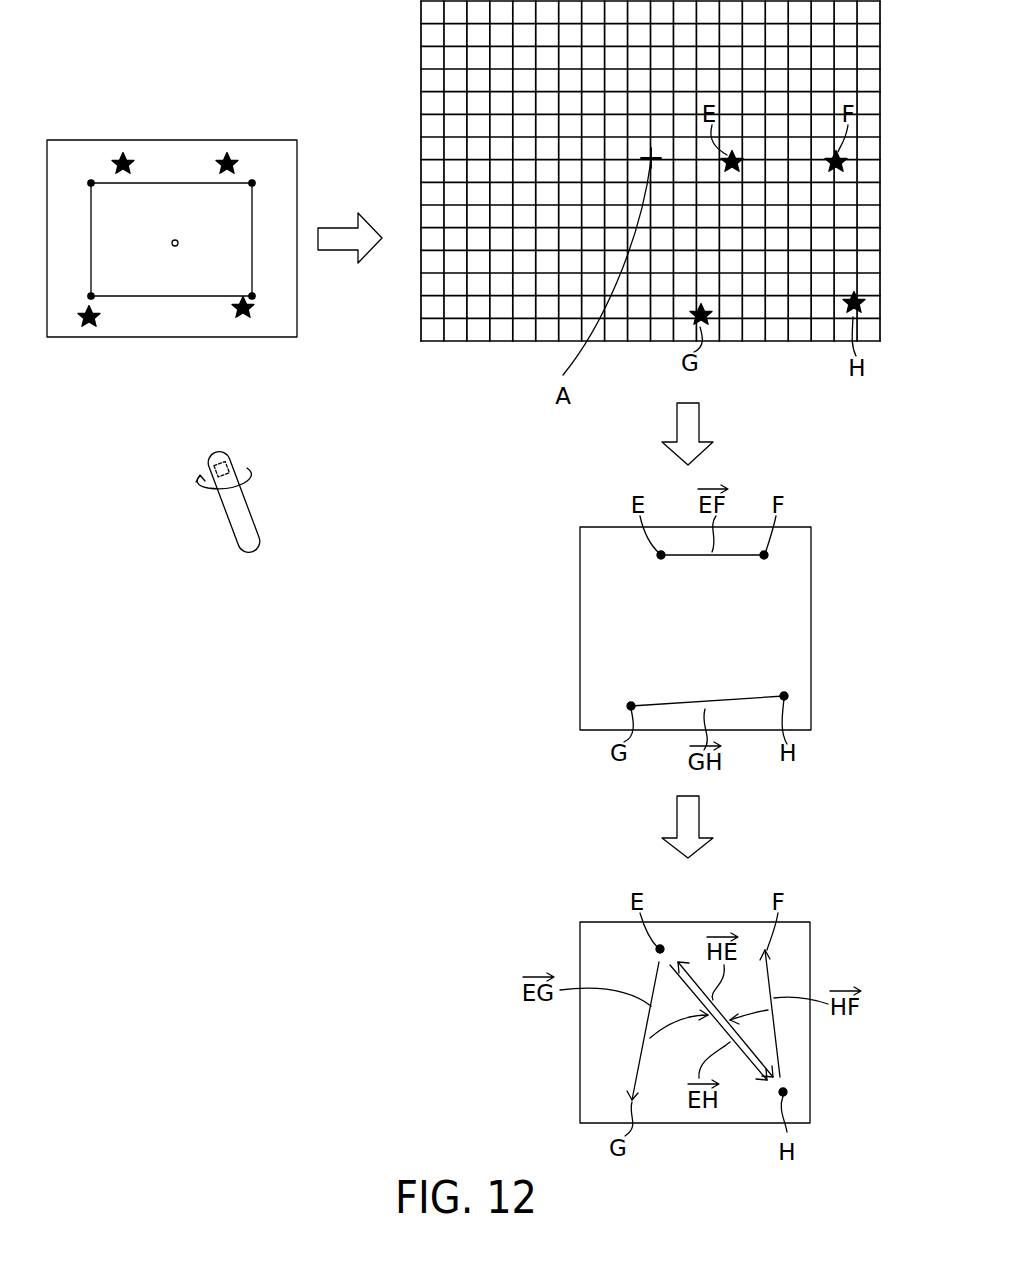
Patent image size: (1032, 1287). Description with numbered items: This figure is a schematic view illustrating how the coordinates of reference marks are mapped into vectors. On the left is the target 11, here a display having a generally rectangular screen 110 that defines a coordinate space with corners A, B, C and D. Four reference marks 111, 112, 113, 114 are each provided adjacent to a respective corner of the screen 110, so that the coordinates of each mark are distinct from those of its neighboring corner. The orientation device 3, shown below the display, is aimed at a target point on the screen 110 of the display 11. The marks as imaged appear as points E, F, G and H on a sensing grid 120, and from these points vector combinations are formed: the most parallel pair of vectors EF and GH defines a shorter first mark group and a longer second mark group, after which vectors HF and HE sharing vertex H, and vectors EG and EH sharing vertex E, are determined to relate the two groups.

The target 11 is at (69, 139).
The screen 110 is at (183, 203).
The reference mark 111 is at (119, 154).
The reference mark 112 is at (229, 154).
The reference mark 113 is at (250, 312).
The reference mark 114 is at (90, 328).
The image sensing array 120 is at (510, 350).
The orientation device 3 is at (240, 508).